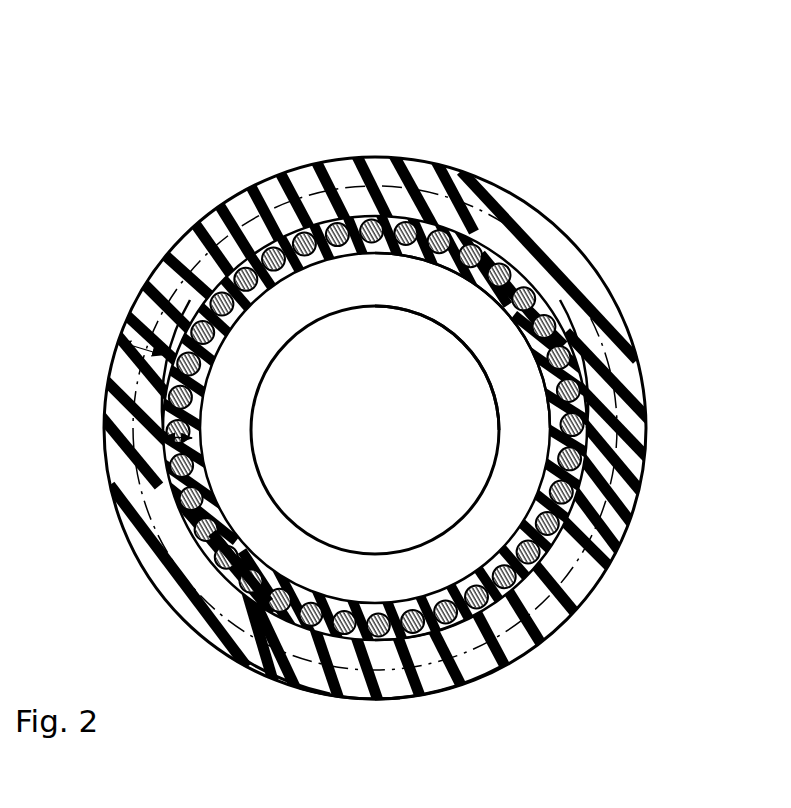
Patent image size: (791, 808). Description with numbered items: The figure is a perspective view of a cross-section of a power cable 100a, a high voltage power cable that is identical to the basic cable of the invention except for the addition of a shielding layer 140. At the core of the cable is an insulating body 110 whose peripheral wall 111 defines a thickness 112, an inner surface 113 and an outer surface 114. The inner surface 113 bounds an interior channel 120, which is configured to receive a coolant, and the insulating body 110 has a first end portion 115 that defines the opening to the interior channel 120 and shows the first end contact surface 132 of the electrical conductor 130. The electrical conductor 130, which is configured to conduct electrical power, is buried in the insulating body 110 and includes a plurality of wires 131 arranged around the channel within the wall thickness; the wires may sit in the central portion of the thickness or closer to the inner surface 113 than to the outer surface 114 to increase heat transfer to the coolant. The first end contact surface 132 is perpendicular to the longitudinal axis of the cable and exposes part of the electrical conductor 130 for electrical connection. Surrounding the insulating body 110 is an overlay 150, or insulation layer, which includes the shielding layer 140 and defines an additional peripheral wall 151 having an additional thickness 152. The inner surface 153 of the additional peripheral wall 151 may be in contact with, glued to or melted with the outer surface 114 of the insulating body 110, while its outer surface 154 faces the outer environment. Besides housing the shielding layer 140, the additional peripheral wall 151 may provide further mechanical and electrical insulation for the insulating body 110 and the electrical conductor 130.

The power cable 100a is at (165, 179).
The insulating body 110 is at (363, 212).
The peripheral wall 111 is at (428, 228).
The thickness 112 is at (170, 440).
The inner surface 113 is at (495, 335).
The outer surface 114 is at (583, 385).
The first end portion 115 is at (160, 400).
The interior channel 120 is at (478, 415).
The electrical conductor 130 is at (700, 533).
The wire 131 is at (518, 563).
The first end contact surface 132 is at (240, 595).
The shielding layer 140 is at (478, 647).
The overlay 150 is at (432, 683).
The additional peripheral wall 151 is at (350, 695).
The additional thickness 152 is at (127, 338).
The inner surface 153 is at (440, 640).
The outer surface 154 is at (285, 688).